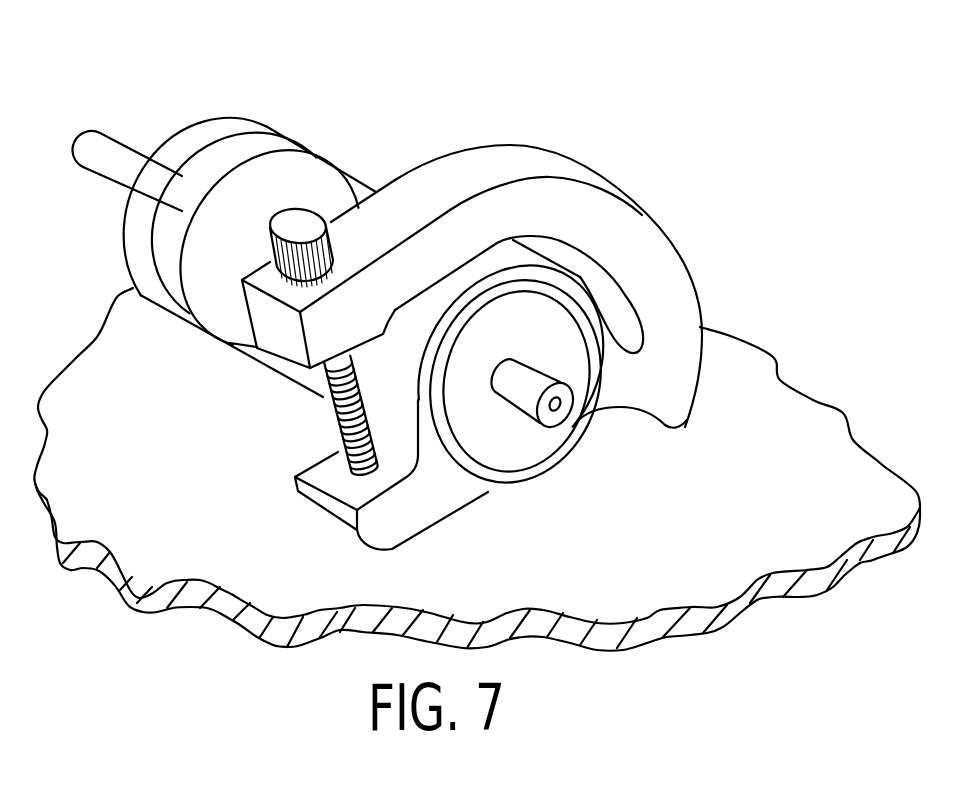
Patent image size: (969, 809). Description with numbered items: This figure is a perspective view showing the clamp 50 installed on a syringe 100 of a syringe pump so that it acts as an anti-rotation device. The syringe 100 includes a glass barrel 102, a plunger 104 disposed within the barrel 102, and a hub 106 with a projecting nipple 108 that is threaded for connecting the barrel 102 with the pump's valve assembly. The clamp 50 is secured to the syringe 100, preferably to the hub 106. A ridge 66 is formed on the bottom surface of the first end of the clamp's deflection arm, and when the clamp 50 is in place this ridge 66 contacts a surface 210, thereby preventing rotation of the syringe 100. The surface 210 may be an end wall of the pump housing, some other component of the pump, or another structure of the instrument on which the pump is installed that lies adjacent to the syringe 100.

The clamp 50 is at (538, 130).
The ridge 66 is at (686, 422).
The syringe 100 is at (367, 138).
The glass barrel 102 is at (367, 177).
The plunger 104 is at (137, 148).
The hub 106 is at (507, 477).
The projecting nipple 108 is at (557, 433).
The surface 210 is at (207, 453).